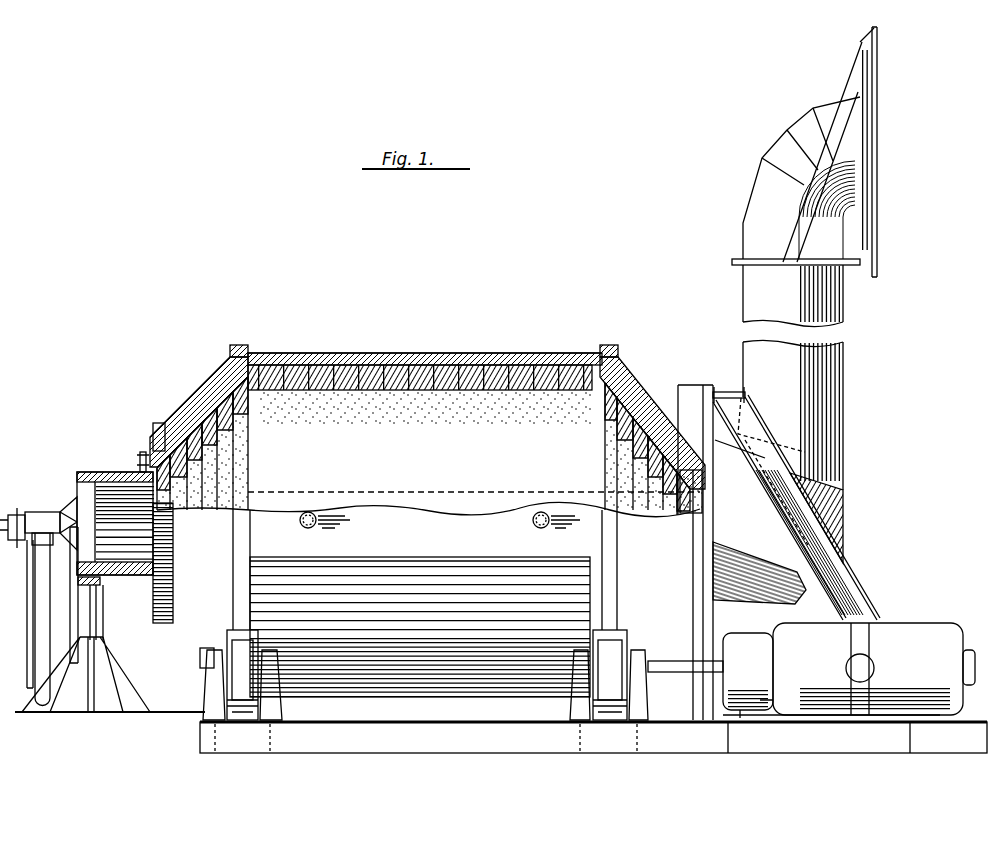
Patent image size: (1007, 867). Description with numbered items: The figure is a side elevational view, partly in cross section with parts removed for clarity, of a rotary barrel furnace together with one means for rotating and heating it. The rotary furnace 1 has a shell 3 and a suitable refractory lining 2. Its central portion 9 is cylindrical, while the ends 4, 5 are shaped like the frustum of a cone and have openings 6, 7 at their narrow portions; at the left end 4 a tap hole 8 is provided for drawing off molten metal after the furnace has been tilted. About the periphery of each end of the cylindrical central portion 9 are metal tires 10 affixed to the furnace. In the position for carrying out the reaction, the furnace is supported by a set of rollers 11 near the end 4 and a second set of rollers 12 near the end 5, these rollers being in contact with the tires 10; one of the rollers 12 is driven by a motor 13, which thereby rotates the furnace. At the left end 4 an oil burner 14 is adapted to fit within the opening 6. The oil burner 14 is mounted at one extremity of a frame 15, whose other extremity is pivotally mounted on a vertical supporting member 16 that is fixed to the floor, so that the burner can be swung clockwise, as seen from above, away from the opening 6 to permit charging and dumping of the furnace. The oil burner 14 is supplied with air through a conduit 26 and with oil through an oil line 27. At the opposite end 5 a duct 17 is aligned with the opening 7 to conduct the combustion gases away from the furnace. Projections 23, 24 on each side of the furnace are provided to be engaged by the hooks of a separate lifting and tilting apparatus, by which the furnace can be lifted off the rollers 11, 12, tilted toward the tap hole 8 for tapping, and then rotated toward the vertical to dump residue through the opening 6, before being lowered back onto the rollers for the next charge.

The rotary furnace 1 is at (393, 332).
The refractory lining 2 is at (330, 392).
The shell 3 is at (508, 352).
The end 4 is at (202, 398).
The end 5 is at (650, 398).
The opening 6 is at (142, 455).
The opening 7 is at (688, 500).
The tap hole 8 is at (210, 652).
The central portion 9 is at (462, 352).
The metal tires 10 is at (242, 344).
The rollers 11 is at (240, 640).
The rollers 12 is at (612, 645).
The motor 13 is at (915, 632).
The oil burner 14 is at (87, 472).
The frame 15 is at (90, 582).
The vertical supporting member 16 is at (78, 605).
The duct 17 is at (845, 382).
The projection 23 is at (300, 527).
The projection 24 is at (535, 528).
The conduit 26 is at (45, 705).
The oil line 27 is at (33, 660).